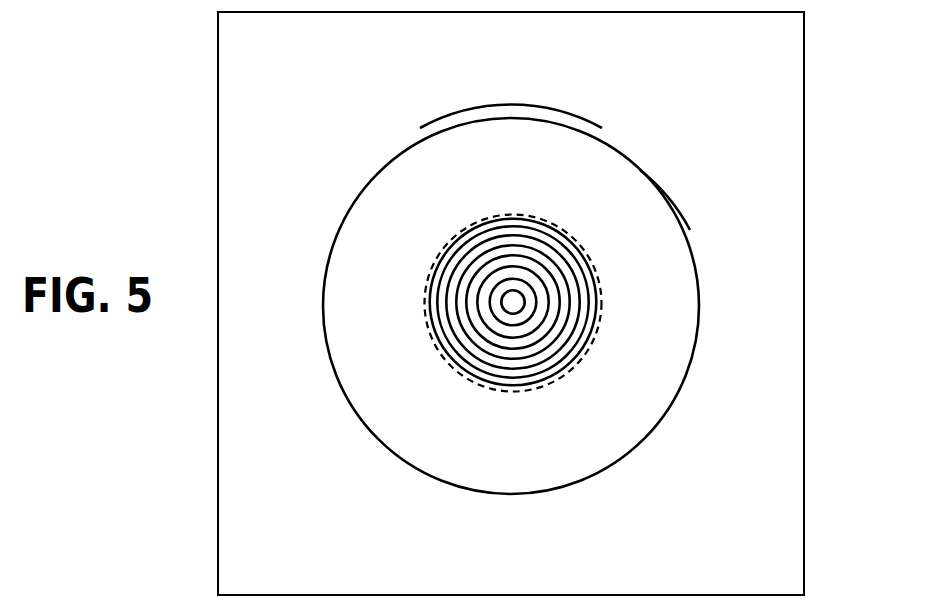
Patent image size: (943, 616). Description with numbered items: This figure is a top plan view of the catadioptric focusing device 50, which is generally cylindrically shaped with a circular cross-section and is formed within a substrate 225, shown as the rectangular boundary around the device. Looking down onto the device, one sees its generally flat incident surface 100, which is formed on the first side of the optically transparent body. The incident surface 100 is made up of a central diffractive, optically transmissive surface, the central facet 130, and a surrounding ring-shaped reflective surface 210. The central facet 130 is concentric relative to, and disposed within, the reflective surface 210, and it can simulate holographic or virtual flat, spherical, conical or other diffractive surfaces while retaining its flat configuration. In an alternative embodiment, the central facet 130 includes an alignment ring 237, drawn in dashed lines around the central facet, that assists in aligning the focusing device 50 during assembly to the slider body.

The focusing device 50 is at (436, 120).
The incident surface 100 is at (663, 191).
The central facet 130 is at (538, 374).
The reflective surface 210 is at (563, 139).
The substrate 225 is at (805, 155).
The alignment ring 237 is at (603, 282).